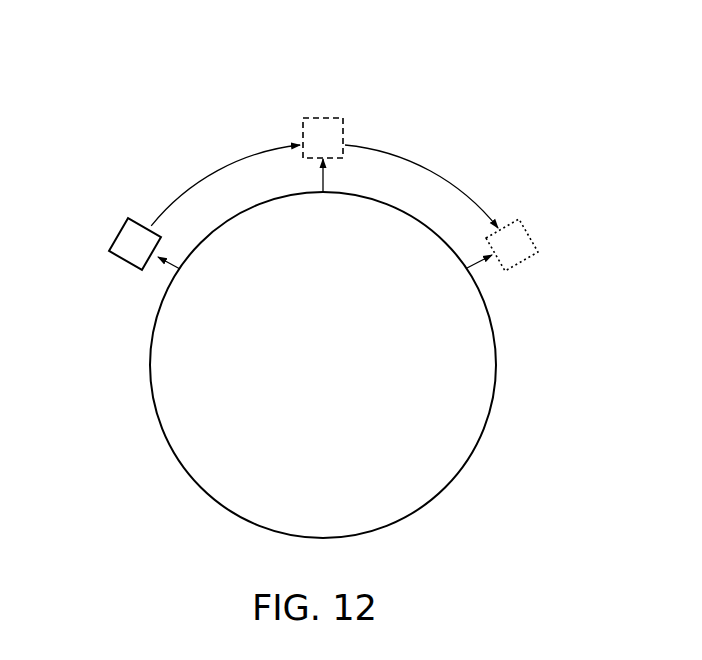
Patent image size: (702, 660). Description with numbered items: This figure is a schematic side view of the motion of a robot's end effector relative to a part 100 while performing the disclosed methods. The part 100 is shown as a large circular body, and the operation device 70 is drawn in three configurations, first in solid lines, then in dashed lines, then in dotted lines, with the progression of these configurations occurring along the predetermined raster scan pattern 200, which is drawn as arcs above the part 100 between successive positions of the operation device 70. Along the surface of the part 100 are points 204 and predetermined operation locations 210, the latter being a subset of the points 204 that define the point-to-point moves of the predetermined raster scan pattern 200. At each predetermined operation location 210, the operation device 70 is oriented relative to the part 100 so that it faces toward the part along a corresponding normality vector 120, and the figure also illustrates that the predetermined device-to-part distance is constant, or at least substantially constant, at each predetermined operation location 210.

The part 100 is at (148, 388).
The operation device 70 is at (113, 242).
The normality vector 120 is at (168, 265).
The predetermined raster scan pattern 200 is at (202, 175).
The points 204 is at (185, 285).
The predetermined operation locations 210 is at (188, 270).